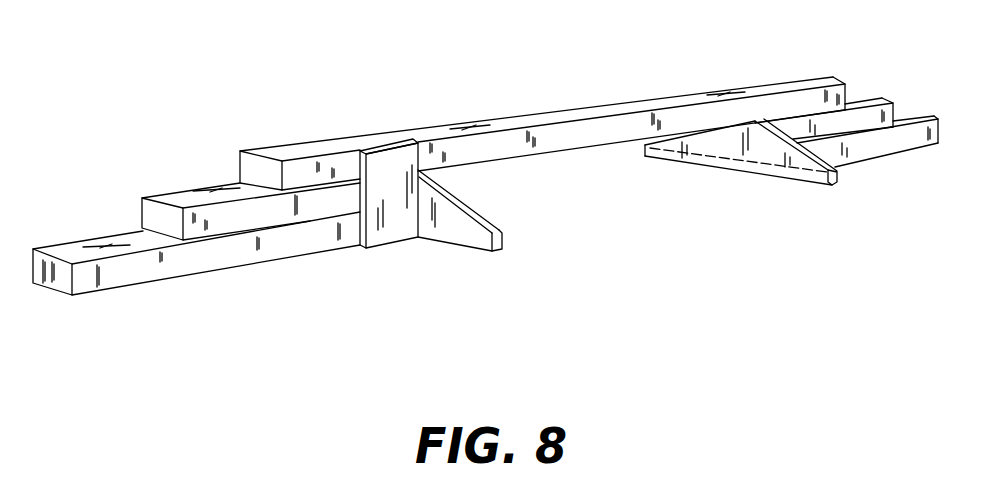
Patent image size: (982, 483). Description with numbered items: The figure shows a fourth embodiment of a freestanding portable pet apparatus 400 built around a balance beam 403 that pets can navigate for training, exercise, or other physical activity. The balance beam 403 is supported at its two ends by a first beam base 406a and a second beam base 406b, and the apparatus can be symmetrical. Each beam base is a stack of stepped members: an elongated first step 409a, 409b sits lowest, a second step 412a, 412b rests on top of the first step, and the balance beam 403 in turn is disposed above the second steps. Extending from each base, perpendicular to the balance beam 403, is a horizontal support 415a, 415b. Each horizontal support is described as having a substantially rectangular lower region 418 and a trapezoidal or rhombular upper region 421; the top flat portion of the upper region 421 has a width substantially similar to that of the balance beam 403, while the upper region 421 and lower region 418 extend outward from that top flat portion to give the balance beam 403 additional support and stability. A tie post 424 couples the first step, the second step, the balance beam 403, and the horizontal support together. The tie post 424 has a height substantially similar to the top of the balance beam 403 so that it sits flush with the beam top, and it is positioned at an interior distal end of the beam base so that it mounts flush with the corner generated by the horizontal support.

The freestanding portable pet apparatus 400 is at (348, 66).
The balance beam 403 is at (555, 108).
The first beam base 406a is at (432, 346).
The second beam base 406b is at (775, 263).
The first step 409a is at (87, 240).
The first step 409b is at (922, 117).
The second step 412a is at (200, 185).
The second step 412b is at (862, 99).
The horizontal support 415a is at (462, 247).
The horizontal support 415b is at (737, 170).
The lower region 418 is at (650, 163).
The upper region 421 is at (782, 158).
The tie post 424 is at (397, 248).